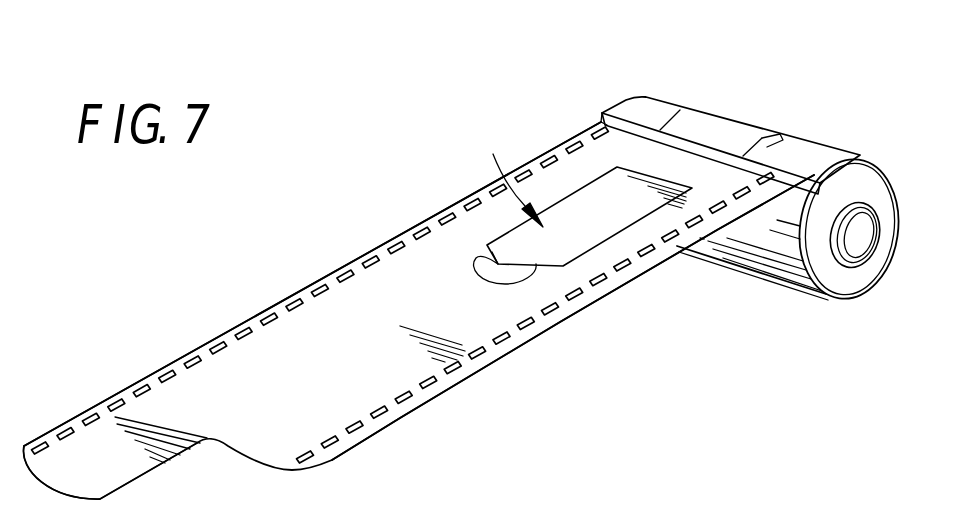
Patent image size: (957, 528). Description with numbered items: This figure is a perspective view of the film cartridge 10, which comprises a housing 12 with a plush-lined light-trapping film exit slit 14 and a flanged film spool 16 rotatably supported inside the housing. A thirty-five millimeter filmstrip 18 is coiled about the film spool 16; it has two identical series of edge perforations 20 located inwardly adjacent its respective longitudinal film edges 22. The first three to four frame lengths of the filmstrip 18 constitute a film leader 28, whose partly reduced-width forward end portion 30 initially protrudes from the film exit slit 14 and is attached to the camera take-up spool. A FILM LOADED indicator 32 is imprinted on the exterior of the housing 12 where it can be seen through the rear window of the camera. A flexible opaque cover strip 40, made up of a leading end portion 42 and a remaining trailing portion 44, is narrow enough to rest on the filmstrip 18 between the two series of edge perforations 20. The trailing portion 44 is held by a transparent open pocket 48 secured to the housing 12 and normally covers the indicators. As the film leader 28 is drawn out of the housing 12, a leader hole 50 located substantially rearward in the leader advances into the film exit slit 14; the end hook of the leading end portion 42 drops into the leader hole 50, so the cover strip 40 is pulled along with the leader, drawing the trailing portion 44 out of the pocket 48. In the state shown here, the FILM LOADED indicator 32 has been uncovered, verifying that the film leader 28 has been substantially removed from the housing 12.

The film cartridge 10 is at (634, 85).
The housing 12 is at (653, 102).
The film exit slit 14 is at (600, 120).
The film spool 16 is at (857, 247).
The filmstrip 18 is at (649, 288).
The edge perforations 20 is at (394, 248).
The longitudinal film edges 22 is at (318, 281).
The film leader 28 is at (372, 338).
The forward end portion 30 is at (236, 408).
The FILM LOADED indicator 32 is at (730, 117).
The cover strip 40 is at (487, 315).
The leading end portion 42 is at (487, 245).
The remaining trailing portion 44 is at (585, 196).
The transparent open pocket 48 is at (782, 138).
The leader hole 50 is at (476, 266).